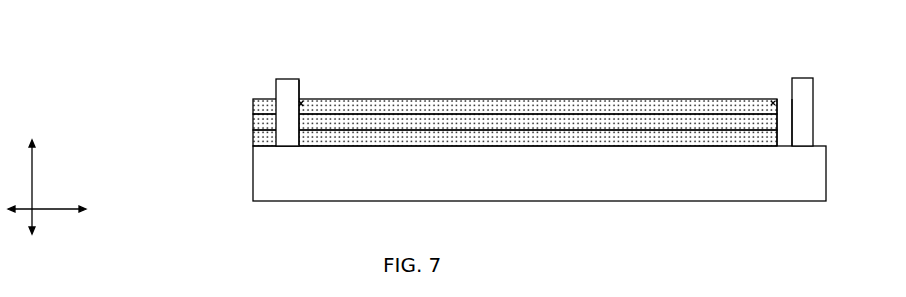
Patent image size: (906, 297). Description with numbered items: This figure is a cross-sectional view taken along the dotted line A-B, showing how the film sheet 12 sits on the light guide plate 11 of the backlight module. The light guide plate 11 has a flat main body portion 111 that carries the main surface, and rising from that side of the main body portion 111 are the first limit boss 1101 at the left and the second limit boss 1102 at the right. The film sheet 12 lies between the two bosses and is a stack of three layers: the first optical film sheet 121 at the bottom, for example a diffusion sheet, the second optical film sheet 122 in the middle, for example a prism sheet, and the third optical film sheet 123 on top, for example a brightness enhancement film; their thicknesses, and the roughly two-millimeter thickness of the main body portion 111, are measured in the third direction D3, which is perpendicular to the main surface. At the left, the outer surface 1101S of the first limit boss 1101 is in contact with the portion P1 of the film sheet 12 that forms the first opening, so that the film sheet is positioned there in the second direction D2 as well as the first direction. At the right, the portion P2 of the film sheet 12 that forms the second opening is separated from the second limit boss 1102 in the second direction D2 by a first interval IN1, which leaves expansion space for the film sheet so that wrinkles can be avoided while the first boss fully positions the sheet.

The light guide plate 11 is at (483, 123).
The first limit boss 1101 is at (232, 82).
The second limit boss 1102 is at (745, 82).
The main body portion 111 is at (539, 187).
The outer surface of the first limit boss 1101S is at (233, 101).
The film sheet 12 is at (458, 118).
The first optical film sheet 121 is at (475, 138).
The second optical film sheet 122 is at (477, 120).
The third optical film sheet 123 is at (475, 102).
The first interval IN1 is at (748, 102).
The portion of the film sheet that forms the first opening P1 is at (301, 104).
The portion of the film sheet that forms the second opening P2 is at (772, 103).
The second direction D2 is at (61, 211).
The third direction D3 is at (32, 177).
The dotted line A-B is at (541, 225).